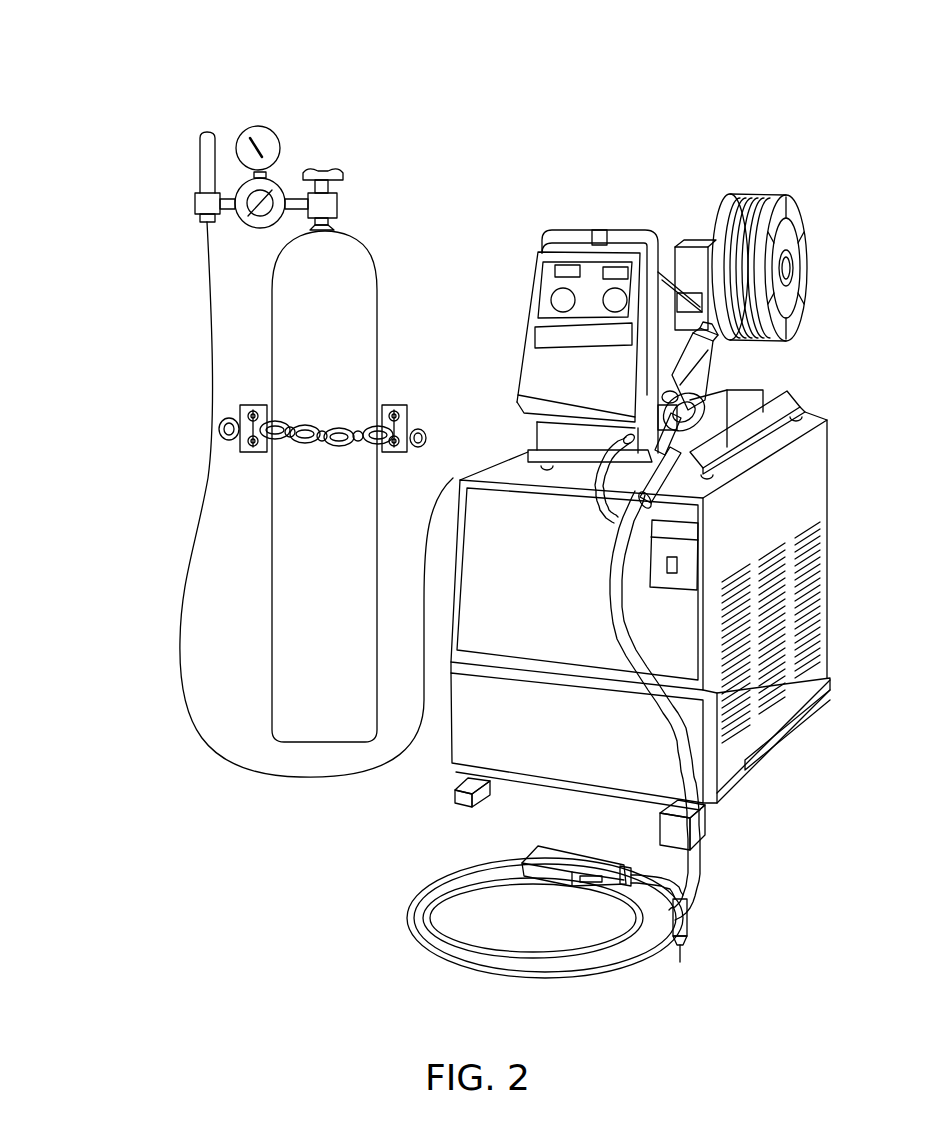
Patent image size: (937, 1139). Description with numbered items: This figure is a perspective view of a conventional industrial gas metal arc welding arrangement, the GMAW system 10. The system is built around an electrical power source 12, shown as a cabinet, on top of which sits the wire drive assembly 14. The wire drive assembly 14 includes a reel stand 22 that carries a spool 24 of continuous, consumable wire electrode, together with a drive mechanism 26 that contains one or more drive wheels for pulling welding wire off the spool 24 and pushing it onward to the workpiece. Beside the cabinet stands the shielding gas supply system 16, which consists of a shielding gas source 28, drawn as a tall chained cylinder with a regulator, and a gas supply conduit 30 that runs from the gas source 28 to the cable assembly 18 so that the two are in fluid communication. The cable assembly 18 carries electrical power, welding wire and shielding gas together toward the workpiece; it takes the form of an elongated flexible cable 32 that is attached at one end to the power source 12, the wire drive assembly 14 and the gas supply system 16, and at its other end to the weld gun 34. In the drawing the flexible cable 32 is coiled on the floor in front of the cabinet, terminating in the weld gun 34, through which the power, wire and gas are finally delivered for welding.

The GMAW system 10 is at (590, 96).
The electrical power source 12 is at (808, 589).
The wire drive assembly 14 is at (830, 163).
The shielding gas supply system 16 is at (392, 177).
The cable assembly 18 is at (382, 958).
The reel stand 22 is at (792, 270).
The spool 24 is at (760, 200).
The drive mechanism 26 is at (708, 366).
The shielding gas source 28 is at (345, 313).
The gas supply conduit 30 is at (205, 494).
The elongated flexible cable 32 is at (432, 878).
The weld gun 34 is at (548, 856).